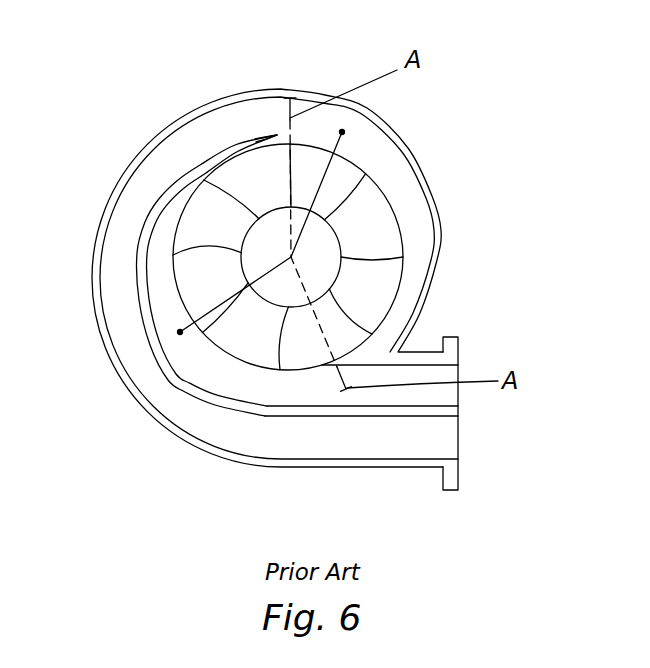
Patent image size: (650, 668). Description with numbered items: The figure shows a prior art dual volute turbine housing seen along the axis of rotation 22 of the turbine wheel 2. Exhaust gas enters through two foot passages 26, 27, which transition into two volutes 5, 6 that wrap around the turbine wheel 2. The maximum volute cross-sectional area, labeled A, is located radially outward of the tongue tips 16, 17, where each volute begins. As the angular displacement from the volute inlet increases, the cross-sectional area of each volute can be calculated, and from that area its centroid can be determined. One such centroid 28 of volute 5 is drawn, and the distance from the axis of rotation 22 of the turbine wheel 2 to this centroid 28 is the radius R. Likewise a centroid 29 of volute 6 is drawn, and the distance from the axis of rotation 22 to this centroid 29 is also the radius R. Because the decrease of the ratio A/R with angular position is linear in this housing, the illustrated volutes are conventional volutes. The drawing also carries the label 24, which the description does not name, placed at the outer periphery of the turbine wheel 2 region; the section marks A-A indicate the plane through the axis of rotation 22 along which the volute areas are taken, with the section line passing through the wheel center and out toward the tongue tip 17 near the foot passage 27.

The turbine wheel 2 is at (376, 257).
The volute 5 is at (232, 378).
The volute 6 is at (392, 162).
The tongue tip 16 is at (280, 135).
The tongue tip 17 is at (335, 365).
The axis of rotation 22 is at (291, 257).
The impeller outer circumference 24 is at (400, 283).
The foot passage 26 is at (268, 440).
The foot passage 27 is at (432, 393).
The centroid 28 is at (180, 332).
The centroid 29 is at (342, 132).